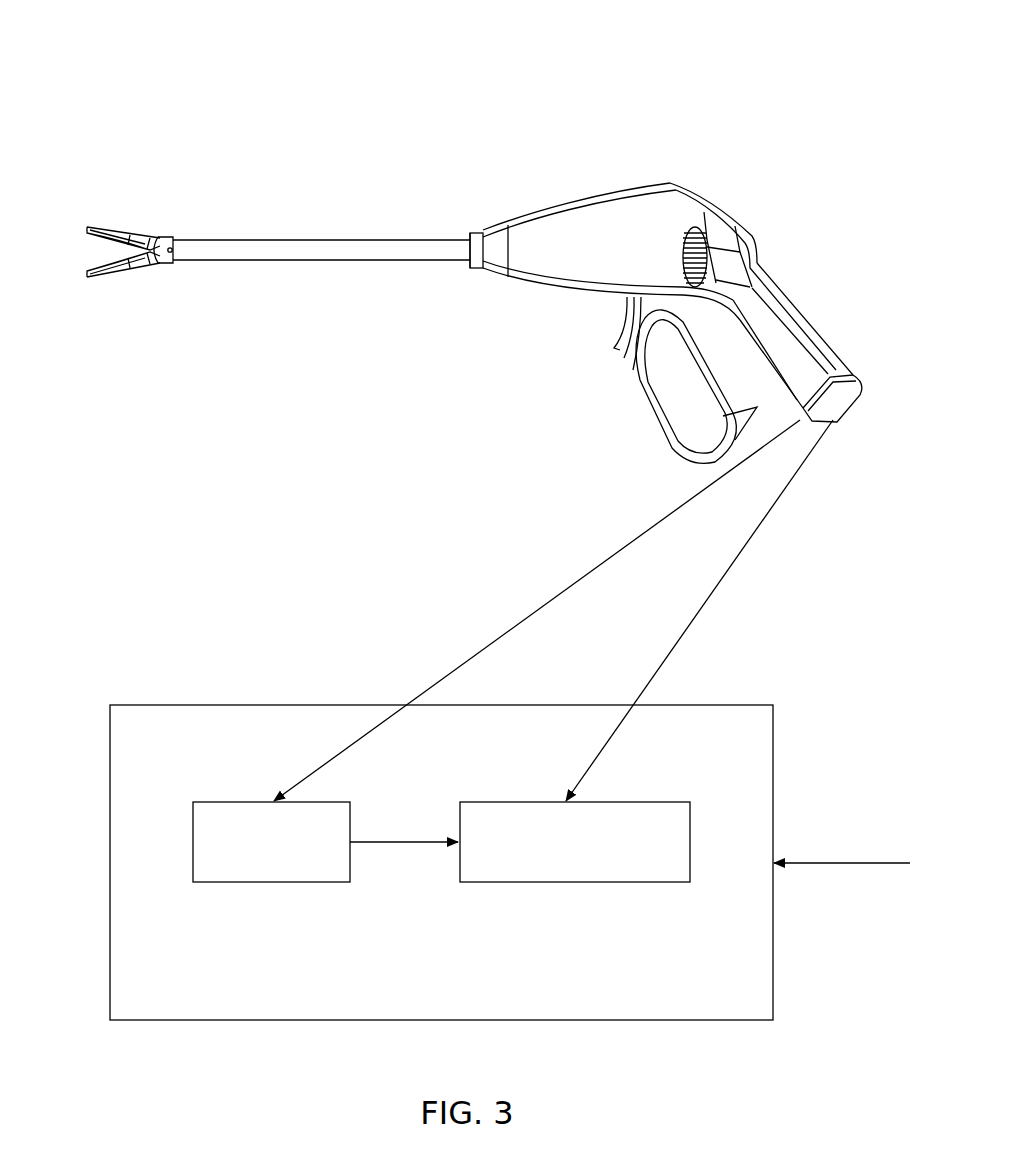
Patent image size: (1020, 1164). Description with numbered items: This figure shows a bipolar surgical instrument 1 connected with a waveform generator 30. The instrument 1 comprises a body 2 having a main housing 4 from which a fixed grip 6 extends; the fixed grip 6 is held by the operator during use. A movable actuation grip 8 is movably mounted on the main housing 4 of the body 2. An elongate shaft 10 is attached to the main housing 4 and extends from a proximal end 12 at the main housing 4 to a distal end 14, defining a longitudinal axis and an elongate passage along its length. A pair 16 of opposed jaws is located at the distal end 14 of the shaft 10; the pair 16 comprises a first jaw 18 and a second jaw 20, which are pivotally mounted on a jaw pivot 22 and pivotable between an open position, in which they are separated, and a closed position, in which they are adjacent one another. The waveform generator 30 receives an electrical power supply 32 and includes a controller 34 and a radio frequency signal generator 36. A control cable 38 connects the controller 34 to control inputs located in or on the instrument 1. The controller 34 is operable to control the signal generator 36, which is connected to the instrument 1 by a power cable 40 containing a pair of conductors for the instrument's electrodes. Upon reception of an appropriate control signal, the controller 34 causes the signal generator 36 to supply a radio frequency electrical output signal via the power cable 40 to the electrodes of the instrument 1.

The instrument 1 is at (104, 128).
The body 2 is at (671, 182).
The main housing 4 is at (613, 251).
The fixed grip 6 is at (811, 327).
The movable actuation grip 8 is at (657, 428).
The elongate shaft 10 is at (330, 240).
The proximal end 12 is at (468, 245).
The distal end 14 is at (181, 264).
The pair of opposed jaws 16 is at (82, 210).
The first jaw 18 is at (90, 226).
The second jaw 20 is at (90, 281).
The jaw pivot 22 is at (176, 247).
The waveform generator 30 is at (774, 706).
The electrical power supply 32 is at (840, 863).
The controller 34 is at (271, 842).
The radio frequency signal generator 36 is at (575, 842).
The control cable 38 is at (585, 577).
The power cable 40 is at (708, 595).